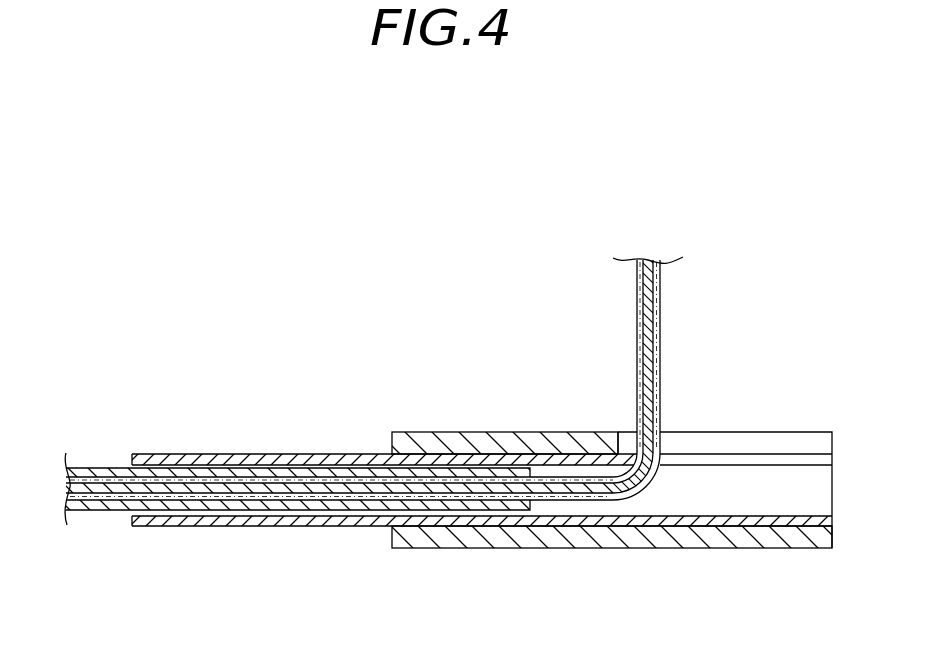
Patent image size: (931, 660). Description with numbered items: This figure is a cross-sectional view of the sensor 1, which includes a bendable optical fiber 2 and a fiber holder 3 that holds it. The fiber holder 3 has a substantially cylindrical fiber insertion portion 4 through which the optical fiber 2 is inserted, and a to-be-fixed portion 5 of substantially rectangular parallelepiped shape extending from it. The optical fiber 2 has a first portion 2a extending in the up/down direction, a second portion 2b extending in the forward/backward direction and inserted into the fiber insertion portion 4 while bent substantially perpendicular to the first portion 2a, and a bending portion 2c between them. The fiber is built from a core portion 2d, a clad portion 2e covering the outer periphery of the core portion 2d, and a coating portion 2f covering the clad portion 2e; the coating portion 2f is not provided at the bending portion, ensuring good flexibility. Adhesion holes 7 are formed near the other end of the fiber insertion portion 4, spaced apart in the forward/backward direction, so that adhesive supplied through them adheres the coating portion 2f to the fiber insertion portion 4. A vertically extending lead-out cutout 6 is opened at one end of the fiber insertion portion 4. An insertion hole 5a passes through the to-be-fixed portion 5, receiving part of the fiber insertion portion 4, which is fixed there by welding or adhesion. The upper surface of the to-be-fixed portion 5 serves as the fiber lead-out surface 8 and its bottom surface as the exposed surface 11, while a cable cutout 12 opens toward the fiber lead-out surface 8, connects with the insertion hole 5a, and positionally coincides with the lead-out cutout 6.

The sensor 1 is at (174, 194).
The optical fiber 2 is at (360, 505).
The first portion 2a is at (660, 275).
The second portion 2b is at (215, 486).
The bending portion 2c is at (640, 485).
The core portion 2d is at (92, 490).
The clad portion 2e is at (105, 472).
The coating portion 2f is at (230, 505).
The fiber holder 3 is at (338, 286).
The fiber insertion portion 4 is at (290, 455).
The to-be-fixed portion 5 is at (437, 452).
The insertion hole 5a is at (767, 520).
The lead-out cutout 6 is at (782, 458).
The adhesion holes 7 is at (168, 527).
The fiber lead-out surface 8 is at (497, 432).
The exposed surface 11 is at (563, 548).
The cable cutout 12 is at (620, 432).